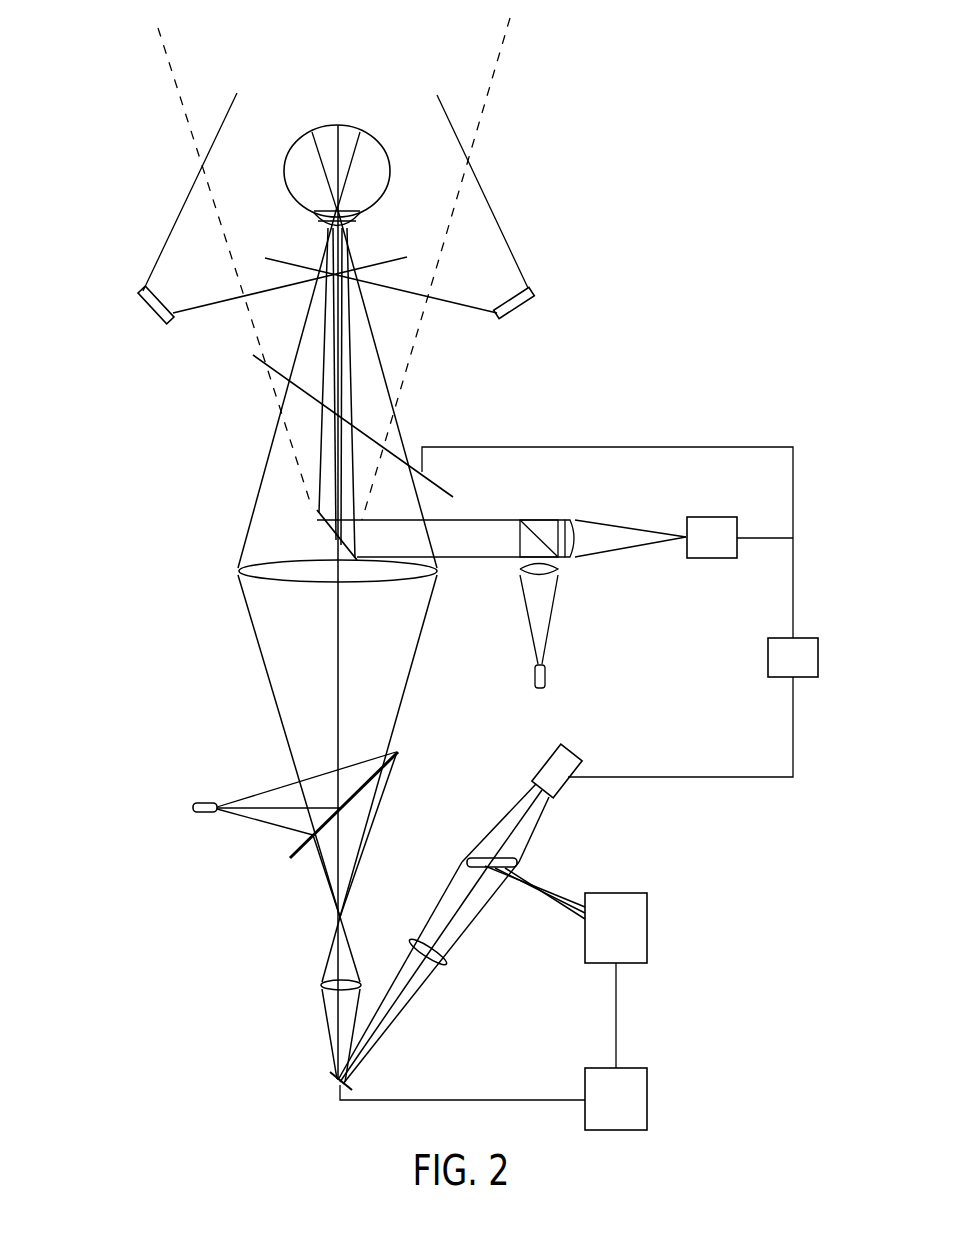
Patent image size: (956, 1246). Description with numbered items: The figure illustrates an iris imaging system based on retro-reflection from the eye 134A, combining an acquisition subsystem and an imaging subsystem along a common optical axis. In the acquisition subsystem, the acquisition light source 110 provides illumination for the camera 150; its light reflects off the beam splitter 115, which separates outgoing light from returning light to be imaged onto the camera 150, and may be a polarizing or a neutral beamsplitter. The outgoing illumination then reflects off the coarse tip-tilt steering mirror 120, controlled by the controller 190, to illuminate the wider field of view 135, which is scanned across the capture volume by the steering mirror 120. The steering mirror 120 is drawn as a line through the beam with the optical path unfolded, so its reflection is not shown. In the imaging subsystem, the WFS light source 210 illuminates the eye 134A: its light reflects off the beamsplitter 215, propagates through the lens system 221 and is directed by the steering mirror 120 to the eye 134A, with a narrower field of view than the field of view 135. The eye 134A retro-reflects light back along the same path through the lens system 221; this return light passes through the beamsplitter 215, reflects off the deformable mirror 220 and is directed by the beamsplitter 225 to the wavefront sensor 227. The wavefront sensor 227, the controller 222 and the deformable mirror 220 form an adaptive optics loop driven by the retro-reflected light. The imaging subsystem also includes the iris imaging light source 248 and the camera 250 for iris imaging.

The eye 134A is at (344, 122).
The field of view 135 is at (514, 47).
The iris imaging light source 248 is at (141, 306).
The coarse tip-tilt steering mirror 120 is at (446, 484).
The acquisition light source 110 is at (320, 536).
The lens system 221 is at (236, 571).
The beam splitter 115 is at (539, 523).
The camera 150 is at (699, 548).
The controller 190 is at (780, 668).
The camera 250 is at (579, 745).
The beamsplitter 215 is at (402, 757).
The WFS light source 210 is at (203, 802).
The beamsplitter 225 is at (472, 857).
The wavefront sensor 227 is at (603, 954).
The controller 222 is at (603, 1110).
The deformable mirror 220 is at (332, 1083).